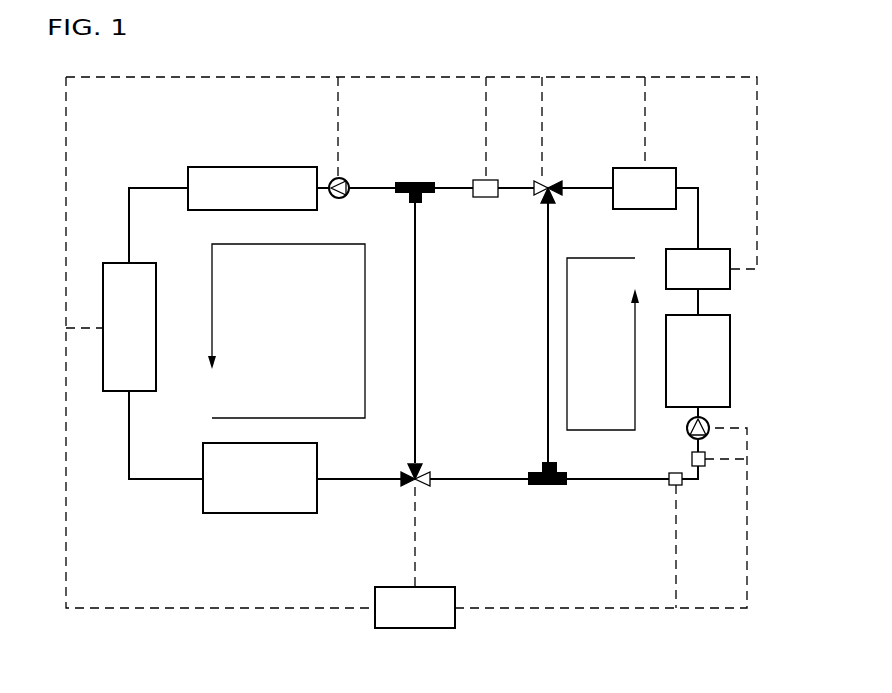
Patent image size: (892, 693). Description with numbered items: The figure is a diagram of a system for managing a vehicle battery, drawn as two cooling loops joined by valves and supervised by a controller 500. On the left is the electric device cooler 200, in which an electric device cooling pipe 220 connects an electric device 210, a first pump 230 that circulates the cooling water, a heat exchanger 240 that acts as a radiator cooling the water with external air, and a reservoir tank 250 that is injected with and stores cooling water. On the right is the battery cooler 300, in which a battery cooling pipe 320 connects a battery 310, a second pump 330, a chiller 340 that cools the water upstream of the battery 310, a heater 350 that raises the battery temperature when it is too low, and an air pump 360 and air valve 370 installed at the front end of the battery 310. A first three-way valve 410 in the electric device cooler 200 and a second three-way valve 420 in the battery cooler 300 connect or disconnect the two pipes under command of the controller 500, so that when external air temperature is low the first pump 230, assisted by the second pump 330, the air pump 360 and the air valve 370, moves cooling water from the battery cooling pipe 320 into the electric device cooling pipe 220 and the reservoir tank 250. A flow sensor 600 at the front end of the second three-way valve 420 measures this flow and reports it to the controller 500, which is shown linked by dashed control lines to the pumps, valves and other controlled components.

The electric device cooler 200 is at (220, 468).
The electric device 210 is at (252, 188).
The electric device cooling pipe 220 is at (150, 186).
The first pump 230 is at (350, 178).
The heat exchanger 240 is at (129, 327).
The reservoir tank 250 is at (260, 478).
The battery cooler 300 is at (607, 475).
The battery 310 is at (698, 361).
The battery cooling pipe 320 is at (585, 480).
The second pump 330 is at (710, 425).
The chiller 340 is at (644, 188).
The heater 350 is at (698, 269).
The air pump 360 is at (707, 462).
The air valve 370 is at (676, 486).
The first 3-way valve 410 is at (402, 486).
The second 3-way valve 420 is at (552, 180).
The controller 500 is at (415, 607).
The flow sensor 600 is at (475, 180).